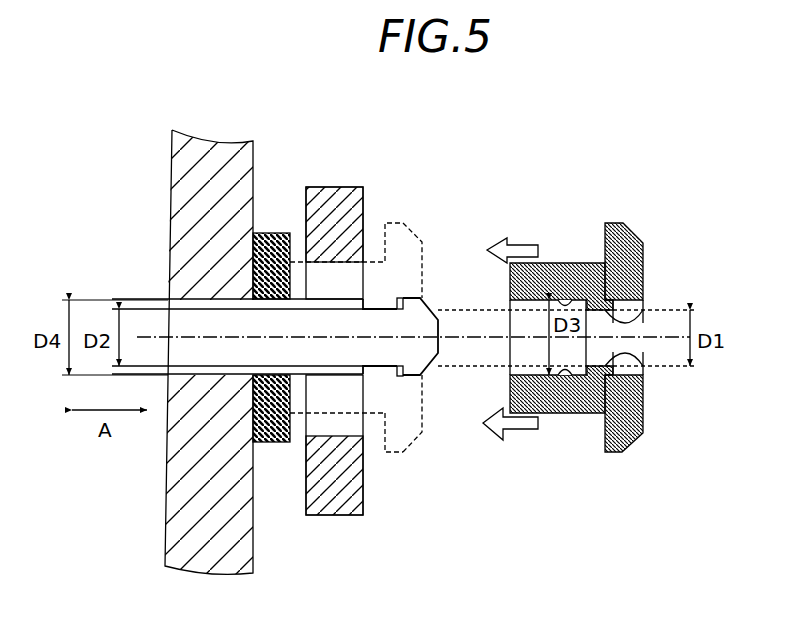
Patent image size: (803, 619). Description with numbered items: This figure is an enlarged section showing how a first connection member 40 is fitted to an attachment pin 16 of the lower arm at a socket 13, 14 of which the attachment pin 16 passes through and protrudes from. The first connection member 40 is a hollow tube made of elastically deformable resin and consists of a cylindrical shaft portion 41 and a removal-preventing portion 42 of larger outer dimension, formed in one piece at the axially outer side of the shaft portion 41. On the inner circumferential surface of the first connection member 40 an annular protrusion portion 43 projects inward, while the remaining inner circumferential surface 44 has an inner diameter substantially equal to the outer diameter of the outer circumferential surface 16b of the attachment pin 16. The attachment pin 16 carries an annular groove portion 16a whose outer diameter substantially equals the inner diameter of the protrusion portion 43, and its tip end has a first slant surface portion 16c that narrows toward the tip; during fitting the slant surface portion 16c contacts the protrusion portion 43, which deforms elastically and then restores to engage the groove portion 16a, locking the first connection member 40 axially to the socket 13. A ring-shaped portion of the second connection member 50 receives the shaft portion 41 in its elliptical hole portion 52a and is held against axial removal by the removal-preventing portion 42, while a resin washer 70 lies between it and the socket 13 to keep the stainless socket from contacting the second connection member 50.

The socket 13 is at (245, 162).
The wall portion 14 is at (209, 352).
The second connection member 50 is at (333, 187).
The hole portion 52a is at (322, 264).
The washer 70 is at (267, 443).
The attachment pin 16 is at (300, 375).
The groove portion 16a is at (380, 375).
The outer circumferential surface 16b is at (407, 378).
The first slant surface portion 16c is at (433, 372).
The protrusion portion 43 is at (416, 298).
The inner circumferential surface 44 is at (577, 300).
The first connection member 40 is at (646, 459).
The shaft portion 41 is at (552, 415).
The removal-preventing portion 42 is at (613, 452).